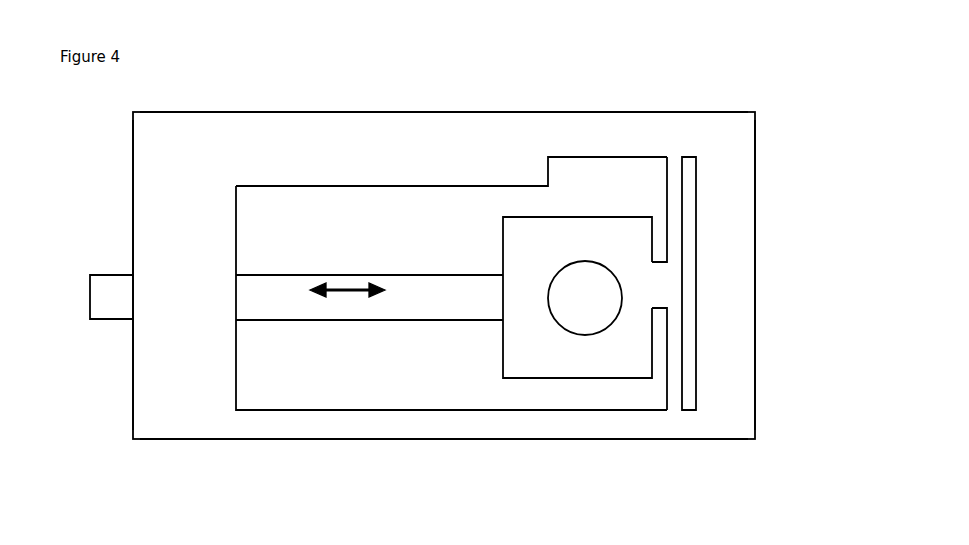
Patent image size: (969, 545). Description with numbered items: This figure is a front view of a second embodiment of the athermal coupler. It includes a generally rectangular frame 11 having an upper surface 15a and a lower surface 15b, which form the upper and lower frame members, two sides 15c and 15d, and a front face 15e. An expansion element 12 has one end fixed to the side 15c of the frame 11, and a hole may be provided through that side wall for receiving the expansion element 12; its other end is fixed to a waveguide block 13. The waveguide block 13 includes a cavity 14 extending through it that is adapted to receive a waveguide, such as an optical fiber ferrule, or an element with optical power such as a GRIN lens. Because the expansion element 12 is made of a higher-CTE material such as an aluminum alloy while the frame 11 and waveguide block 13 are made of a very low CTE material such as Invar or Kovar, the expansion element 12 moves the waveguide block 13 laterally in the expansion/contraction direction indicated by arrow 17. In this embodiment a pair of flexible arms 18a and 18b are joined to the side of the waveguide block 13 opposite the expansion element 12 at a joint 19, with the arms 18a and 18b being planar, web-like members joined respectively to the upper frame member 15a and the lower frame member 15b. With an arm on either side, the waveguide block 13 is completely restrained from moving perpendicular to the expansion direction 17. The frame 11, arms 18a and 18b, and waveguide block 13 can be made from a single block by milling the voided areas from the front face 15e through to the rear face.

The frame 11 is at (163, 127).
The expansion element 12 is at (266, 290).
The waveguide block 13 is at (548, 230).
The cavity 14 is at (592, 275).
The upper surface 15a is at (695, 112).
The lower surface 15b is at (263, 439).
The side 15c is at (133, 229).
The side 15d is at (755, 277).
The front face 15e is at (187, 332).
The arrow 17 is at (356, 290).
The flexible arm 18a is at (683, 187).
The flexible arm 18b is at (682, 350).
The joint 19 is at (667, 276).